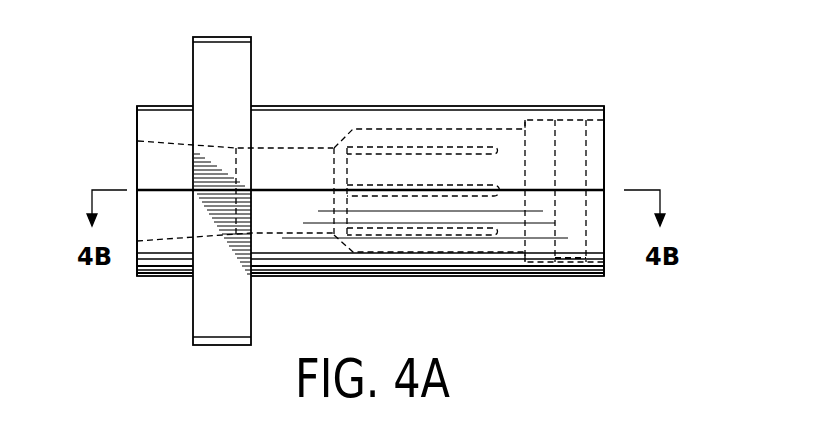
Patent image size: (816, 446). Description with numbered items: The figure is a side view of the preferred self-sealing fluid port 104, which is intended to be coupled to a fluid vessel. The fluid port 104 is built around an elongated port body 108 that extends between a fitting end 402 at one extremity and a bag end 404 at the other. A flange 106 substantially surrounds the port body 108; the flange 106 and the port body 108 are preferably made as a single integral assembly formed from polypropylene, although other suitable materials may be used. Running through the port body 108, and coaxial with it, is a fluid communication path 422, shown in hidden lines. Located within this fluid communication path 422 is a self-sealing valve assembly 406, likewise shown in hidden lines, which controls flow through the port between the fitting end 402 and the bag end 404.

The self-sealing fluid port 104 is at (120, 45).
The flange 106 is at (251, 62).
The port body 108 is at (327, 277).
The fitting end 402 is at (160, 277).
The bag end 404 is at (560, 277).
The self-sealing valve assembly 406 is at (466, 134).
The fluid communication path 422 is at (174, 178).